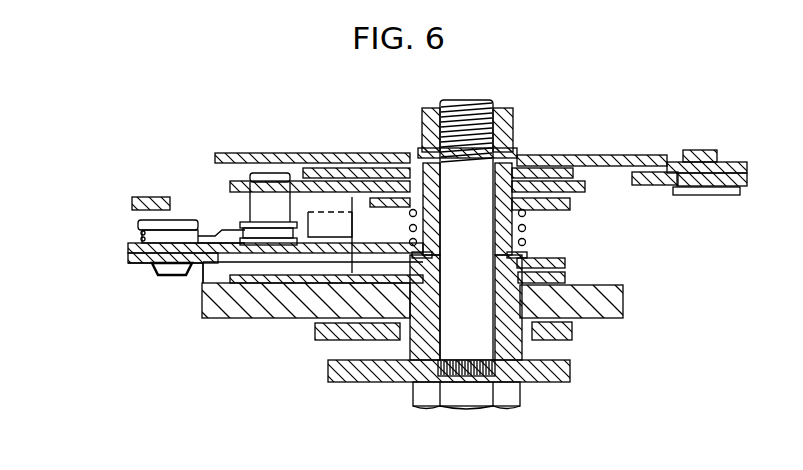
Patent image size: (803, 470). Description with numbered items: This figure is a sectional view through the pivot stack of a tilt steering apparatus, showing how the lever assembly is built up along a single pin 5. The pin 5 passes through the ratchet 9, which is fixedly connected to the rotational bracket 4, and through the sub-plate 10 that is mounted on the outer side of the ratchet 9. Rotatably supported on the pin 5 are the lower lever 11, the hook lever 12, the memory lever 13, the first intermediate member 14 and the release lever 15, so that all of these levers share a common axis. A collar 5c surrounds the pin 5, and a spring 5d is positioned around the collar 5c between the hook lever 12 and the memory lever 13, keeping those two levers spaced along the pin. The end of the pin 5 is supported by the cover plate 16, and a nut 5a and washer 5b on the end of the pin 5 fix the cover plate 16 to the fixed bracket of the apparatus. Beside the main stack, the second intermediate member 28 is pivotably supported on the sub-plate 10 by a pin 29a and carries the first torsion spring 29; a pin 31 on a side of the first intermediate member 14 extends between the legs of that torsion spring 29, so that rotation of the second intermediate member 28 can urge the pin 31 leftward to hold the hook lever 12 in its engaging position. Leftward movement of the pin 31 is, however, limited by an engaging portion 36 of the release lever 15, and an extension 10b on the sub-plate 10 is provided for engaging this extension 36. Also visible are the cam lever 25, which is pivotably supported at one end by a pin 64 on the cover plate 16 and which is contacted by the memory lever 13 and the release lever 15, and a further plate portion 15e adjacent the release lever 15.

The rotational bracket 4 is at (552, 373).
The pin 5 is at (478, 185).
The nut 5a is at (510, 118).
The washer 5b is at (518, 150).
The collar 5c is at (572, 338).
The spring 5d is at (535, 230).
The ratchet 9 is at (220, 308).
The sub-plate 10 is at (142, 265).
The extension 10b is at (310, 265).
The lower lever 11 is at (320, 340).
The hook lever 12 is at (568, 262).
The memory lever 13 is at (387, 203).
The first intermediate member 14 is at (237, 186).
The release lever 15 is at (347, 190).
The plate extension 15e is at (566, 205).
The cover plate 16 is at (320, 155).
The cam lever 25 is at (633, 185).
The second intermediate member 28 is at (200, 262).
The first torsion spring 29 is at (243, 227).
The pin 29a is at (130, 245).
The pin 31 is at (253, 207).
The engaging portion 36 is at (317, 205).
The pin 64 is at (703, 180).